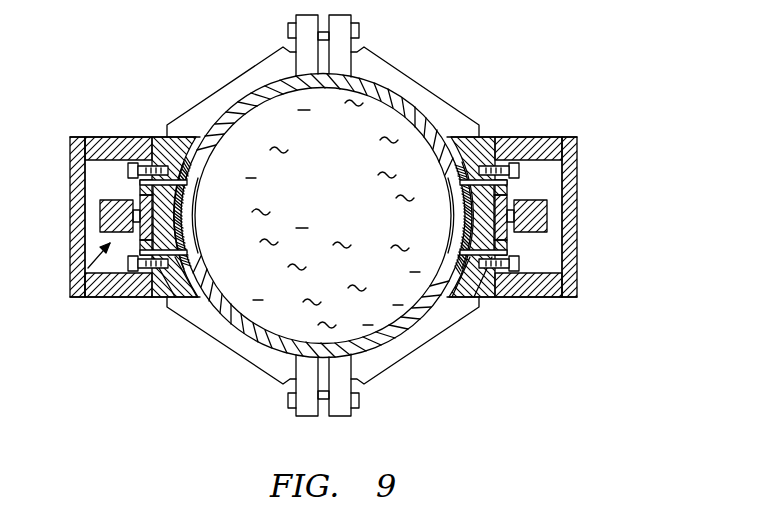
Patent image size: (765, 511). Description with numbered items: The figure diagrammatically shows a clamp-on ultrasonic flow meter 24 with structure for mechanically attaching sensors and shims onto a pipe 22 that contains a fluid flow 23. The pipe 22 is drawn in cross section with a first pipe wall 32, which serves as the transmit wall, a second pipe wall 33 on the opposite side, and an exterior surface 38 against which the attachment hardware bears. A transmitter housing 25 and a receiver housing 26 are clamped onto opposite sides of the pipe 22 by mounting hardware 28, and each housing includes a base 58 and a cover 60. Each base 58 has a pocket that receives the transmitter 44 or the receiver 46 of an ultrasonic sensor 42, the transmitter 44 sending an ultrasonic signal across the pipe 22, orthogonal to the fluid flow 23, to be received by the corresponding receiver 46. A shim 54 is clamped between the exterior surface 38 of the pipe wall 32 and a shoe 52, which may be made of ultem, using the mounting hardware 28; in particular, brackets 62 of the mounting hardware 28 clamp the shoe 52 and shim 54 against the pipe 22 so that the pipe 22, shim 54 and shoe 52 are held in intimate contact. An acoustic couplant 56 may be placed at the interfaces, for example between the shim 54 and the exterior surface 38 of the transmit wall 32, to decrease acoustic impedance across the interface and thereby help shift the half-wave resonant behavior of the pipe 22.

The pipe 22 is at (410, 332).
The fluid flow 23 is at (337, 222).
The ultrasonic flow meter 24 is at (500, 105).
The transmitter housing 25 is at (85, 297).
The receiver housing 26 is at (540, 137).
The mounting hardware 28 is at (375, 388).
The first pipe wall 32 is at (197, 232).
The second pipe wall 33 is at (455, 215).
The exterior surface 38 is at (252, 345).
The ultrasonic sensor 42 is at (86, 268).
The transmitter 44 is at (100, 218).
The receiver 46 is at (547, 220).
The sensor shoe 52 is at (110, 297).
The shim 54 is at (163, 297).
The acoustic couplant 56 is at (200, 196).
The base 58 is at (172, 297).
The cover 60 is at (103, 147).
The bracket 62 is at (152, 167).